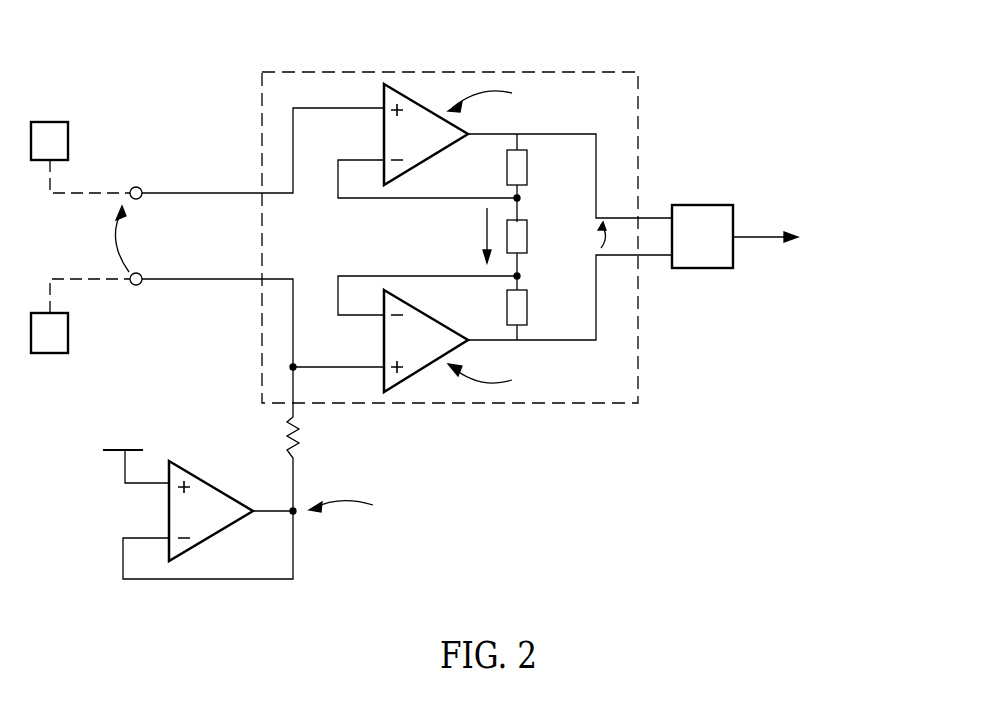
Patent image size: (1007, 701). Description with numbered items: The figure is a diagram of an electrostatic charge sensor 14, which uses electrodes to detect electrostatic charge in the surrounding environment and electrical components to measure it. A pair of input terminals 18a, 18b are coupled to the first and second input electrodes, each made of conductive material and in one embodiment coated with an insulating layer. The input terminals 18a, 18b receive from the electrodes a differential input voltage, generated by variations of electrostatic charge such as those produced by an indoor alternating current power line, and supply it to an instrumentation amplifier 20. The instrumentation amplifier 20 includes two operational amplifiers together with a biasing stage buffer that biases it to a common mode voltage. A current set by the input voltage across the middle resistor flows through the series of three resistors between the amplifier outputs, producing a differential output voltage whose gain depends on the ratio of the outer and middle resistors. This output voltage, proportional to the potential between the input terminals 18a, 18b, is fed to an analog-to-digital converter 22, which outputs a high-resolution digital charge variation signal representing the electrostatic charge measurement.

The electrostatic charge sensor 14 is at (164, 70).
The input terminal 18a is at (137, 186).
The input terminal 18b is at (140, 286).
The instrumentation amplifier 20 is at (328, 72).
The analog-to-digital converter (ADC) 22 is at (702, 205).